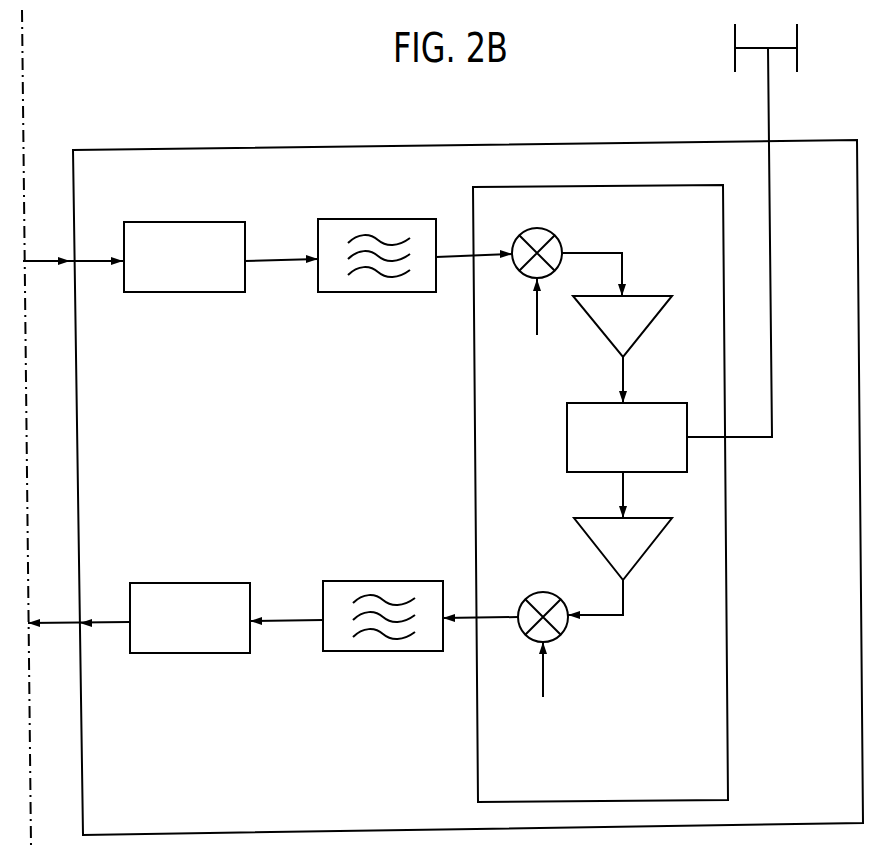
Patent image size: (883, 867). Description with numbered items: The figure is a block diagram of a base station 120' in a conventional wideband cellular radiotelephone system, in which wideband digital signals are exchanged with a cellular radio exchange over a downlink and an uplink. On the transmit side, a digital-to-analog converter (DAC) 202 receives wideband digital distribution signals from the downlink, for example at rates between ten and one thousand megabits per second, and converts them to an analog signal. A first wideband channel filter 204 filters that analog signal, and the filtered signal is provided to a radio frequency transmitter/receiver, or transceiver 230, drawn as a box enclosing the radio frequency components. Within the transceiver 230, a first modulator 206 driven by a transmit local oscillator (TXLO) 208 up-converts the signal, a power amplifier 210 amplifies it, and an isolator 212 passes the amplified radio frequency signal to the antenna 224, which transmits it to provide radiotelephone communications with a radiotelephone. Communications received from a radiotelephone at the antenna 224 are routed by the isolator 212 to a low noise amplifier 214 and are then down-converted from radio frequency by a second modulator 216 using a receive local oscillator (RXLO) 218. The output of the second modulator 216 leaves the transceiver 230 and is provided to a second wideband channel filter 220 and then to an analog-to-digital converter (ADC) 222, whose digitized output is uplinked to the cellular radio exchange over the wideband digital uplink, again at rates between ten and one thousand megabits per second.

The base station 120' is at (468, 469).
The digital-to-analog converter (DAC) 202 is at (226, 221).
The first wideband channel filter 204 is at (418, 219).
The first modulator 206 is at (562, 243).
The transmit local oscillator (TXLO) 208 is at (532, 303).
The power amplifier 210 is at (662, 276).
The isolator 212 is at (668, 400).
The low noise amplifier 214 is at (650, 517).
The second modulator 216 is at (585, 590).
The receive local oscillator (RXLO) 218 is at (537, 665).
The second wideband channel filter 220 is at (422, 580).
The analog-to-digital converter (ADC) 222 is at (232, 580).
The antenna 224 is at (770, 123).
The radio frequency transmitter/receiver (transceiver) 230 is at (728, 610).